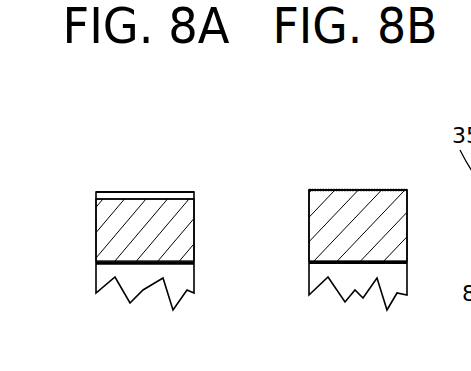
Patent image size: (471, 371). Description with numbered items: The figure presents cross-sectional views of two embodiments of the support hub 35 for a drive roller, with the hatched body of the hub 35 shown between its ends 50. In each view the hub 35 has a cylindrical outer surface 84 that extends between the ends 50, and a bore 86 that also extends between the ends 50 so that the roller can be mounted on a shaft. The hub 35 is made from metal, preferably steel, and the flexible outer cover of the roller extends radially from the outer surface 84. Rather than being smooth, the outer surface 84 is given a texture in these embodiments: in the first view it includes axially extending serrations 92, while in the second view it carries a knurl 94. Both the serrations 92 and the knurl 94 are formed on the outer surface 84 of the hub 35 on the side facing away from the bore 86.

In FIG. 8A, the hub 35 is at (88, 208).
In FIG. 8B, the hub 35 is at (302, 208).
In FIG. 8A, the ends 50 is at (96, 244).
In FIG. 8B, the ends 50 is at (309, 247).
In FIG. 8A, the cylindrical outer surface 84 is at (108, 193).
In FIG. 8B, the cylindrical outer surface 84 is at (348, 190).
In FIG. 8A, the bore 86 is at (110, 268).
In FIG. 8B, the bore 86 is at (338, 267).
In FIG. 8A, the axially extending serrations 92 is at (135, 193).
In FIG. 8B, the knurl 94 is at (382, 190).